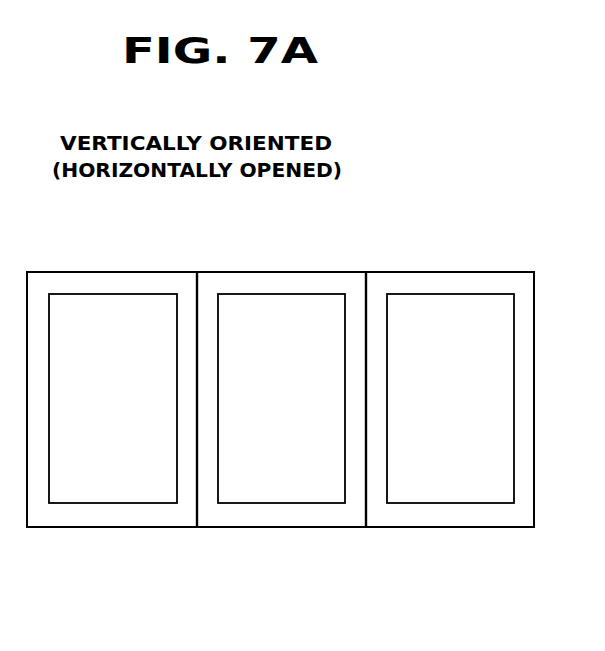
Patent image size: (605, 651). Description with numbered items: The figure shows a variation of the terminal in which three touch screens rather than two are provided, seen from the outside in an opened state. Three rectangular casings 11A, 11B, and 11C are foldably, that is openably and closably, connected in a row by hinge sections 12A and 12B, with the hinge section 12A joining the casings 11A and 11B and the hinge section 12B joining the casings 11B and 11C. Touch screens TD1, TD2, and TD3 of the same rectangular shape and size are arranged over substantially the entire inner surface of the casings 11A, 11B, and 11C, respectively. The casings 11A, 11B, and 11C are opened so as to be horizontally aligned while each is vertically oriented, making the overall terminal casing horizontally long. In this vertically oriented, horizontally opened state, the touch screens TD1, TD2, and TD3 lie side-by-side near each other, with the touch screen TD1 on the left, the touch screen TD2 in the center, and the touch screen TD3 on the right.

The rectangular casing 11A is at (170, 272).
The rectangular casing 11B is at (310, 283).
The rectangular casing 11C is at (495, 282).
The hinge section 12A is at (198, 290).
The hinge section 12B is at (367, 290).
The touch screen TD1 is at (88, 490).
The touch screen TD2 is at (255, 490).
The touch screen TD3 is at (424, 490).